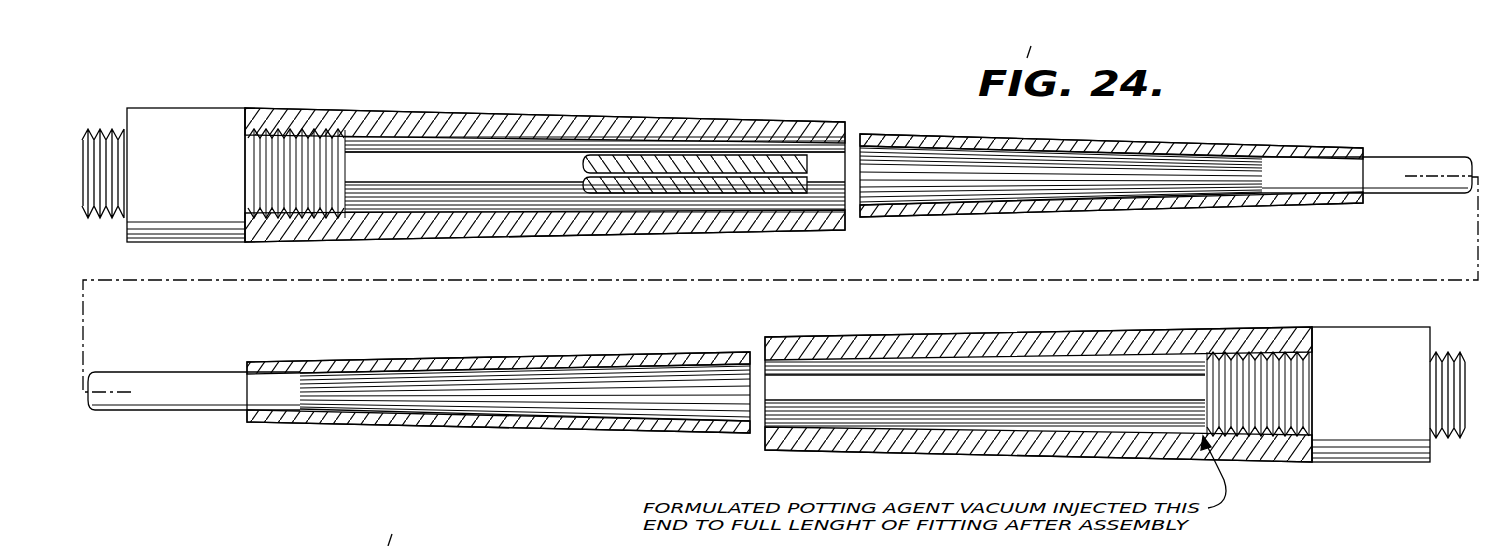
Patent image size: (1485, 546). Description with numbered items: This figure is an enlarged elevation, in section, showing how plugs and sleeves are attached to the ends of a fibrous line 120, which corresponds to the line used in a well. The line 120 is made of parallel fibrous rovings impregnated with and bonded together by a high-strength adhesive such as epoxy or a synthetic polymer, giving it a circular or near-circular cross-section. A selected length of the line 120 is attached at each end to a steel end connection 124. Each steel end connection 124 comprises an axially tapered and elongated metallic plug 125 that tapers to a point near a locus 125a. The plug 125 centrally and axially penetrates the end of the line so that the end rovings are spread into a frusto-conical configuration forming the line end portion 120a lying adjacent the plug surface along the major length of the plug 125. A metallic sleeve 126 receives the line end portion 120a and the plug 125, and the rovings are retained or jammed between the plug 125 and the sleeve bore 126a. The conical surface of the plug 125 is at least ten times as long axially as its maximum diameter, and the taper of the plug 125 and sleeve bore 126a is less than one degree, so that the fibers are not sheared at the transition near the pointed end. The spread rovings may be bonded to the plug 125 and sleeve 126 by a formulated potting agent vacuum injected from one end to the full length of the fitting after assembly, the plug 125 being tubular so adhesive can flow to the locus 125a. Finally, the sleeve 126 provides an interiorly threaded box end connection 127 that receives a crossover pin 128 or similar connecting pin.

The line 120 is at (1425, 183).
The line end portion 120a is at (544, 200).
The steel end connection 124 is at (785, 119).
The metallic plug 125 is at (533, 178).
The locus 125a is at (1153, 178).
The metallic sleeve 126 is at (400, 232).
The sleeve bore 126a is at (432, 144).
The interiorly threaded box end connection 127 is at (338, 148).
The crossover pin 128 is at (253, 128).